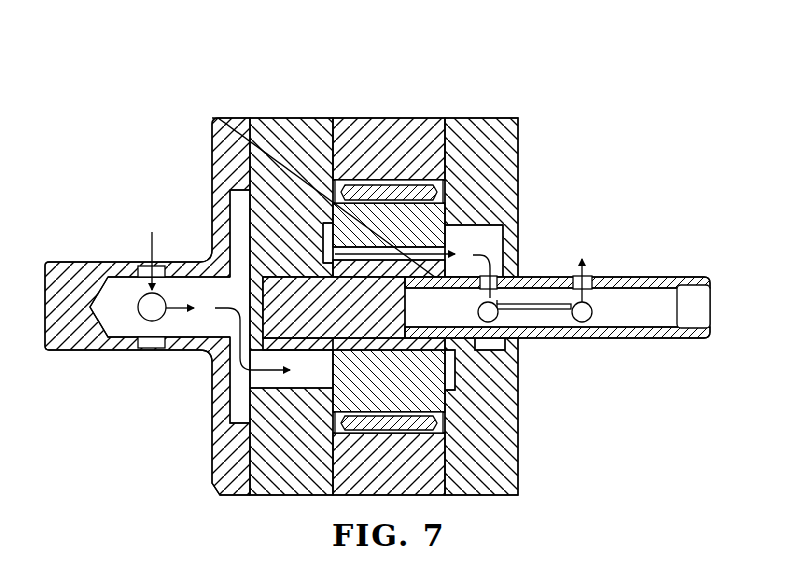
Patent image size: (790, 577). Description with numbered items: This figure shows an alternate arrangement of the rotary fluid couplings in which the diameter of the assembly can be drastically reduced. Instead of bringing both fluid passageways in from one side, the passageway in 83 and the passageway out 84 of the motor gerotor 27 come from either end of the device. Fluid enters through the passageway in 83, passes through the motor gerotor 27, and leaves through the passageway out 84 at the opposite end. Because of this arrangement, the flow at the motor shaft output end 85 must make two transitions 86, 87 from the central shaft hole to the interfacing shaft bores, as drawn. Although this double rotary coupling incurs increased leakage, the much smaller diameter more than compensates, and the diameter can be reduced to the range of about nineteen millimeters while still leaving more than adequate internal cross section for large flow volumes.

The motor gerotor 27 is at (342, 196).
The passageway in 83 is at (150, 262).
The passageway out 84 is at (592, 272).
The motor shaft output end 85 is at (690, 278).
The transition 86 is at (497, 318).
The transition 87 is at (588, 318).